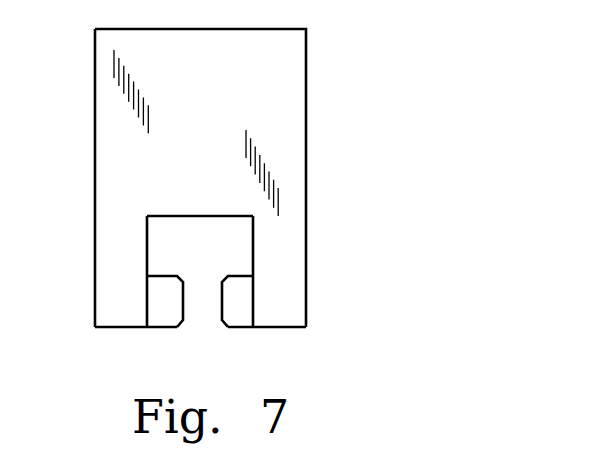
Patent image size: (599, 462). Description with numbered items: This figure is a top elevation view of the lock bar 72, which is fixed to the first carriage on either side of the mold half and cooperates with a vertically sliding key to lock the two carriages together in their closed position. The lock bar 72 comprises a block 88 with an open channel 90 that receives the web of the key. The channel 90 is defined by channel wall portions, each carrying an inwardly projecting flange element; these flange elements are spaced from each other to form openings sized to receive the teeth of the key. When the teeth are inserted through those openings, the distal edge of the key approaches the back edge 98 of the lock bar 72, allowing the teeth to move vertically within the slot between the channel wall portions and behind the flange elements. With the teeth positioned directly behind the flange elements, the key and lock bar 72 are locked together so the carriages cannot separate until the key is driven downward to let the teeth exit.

The lock bar 72 is at (283, 100).
The block 88 is at (117, 168).
The back edge 98 is at (203, 222).
The open channel 90 is at (200, 318).